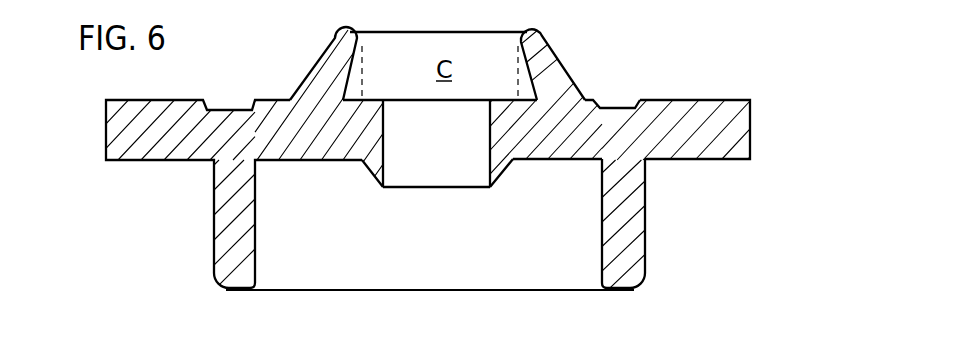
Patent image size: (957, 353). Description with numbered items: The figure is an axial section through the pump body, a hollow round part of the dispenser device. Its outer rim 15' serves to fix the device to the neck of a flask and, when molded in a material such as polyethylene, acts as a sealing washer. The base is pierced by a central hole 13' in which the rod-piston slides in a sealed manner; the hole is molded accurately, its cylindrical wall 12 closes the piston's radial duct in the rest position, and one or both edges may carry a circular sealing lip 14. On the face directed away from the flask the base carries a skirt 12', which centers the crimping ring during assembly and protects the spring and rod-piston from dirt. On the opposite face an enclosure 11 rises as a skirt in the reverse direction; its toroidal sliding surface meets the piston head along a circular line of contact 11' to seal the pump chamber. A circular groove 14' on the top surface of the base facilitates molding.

The enclosure 11 is at (562, 64).
The circular line of contact 11' is at (324, 56).
The cylindrical wall of the hole 12 is at (436, 218).
The skirt 12' is at (648, 223).
The central hole 13' is at (429, 256).
The circular sealing lip 14 is at (422, 248).
The circular groove 14' is at (614, 86).
The outer rim 15' is at (718, 129).